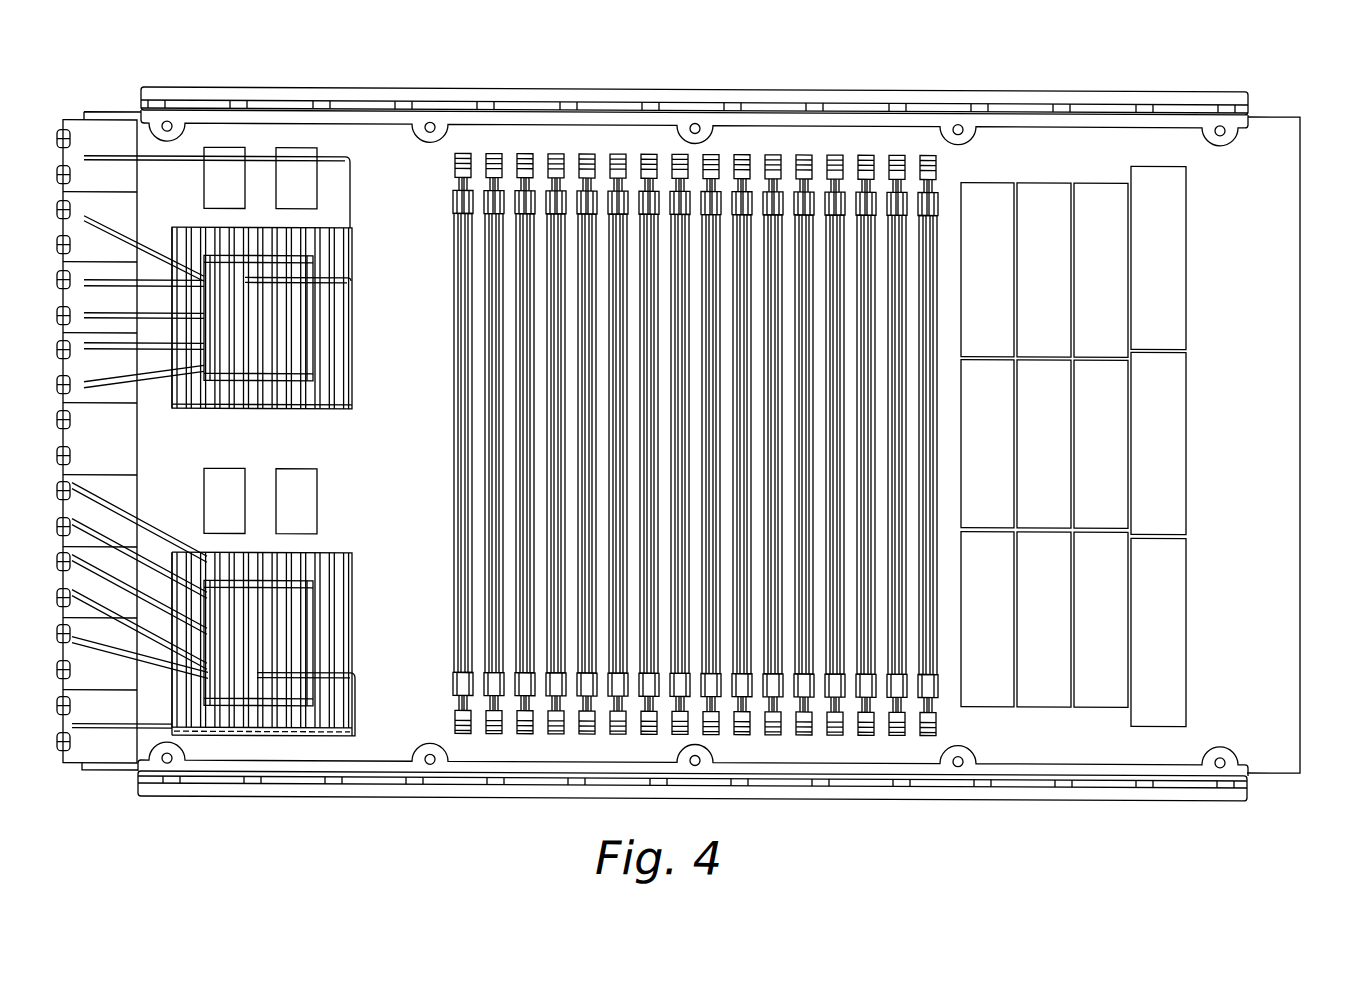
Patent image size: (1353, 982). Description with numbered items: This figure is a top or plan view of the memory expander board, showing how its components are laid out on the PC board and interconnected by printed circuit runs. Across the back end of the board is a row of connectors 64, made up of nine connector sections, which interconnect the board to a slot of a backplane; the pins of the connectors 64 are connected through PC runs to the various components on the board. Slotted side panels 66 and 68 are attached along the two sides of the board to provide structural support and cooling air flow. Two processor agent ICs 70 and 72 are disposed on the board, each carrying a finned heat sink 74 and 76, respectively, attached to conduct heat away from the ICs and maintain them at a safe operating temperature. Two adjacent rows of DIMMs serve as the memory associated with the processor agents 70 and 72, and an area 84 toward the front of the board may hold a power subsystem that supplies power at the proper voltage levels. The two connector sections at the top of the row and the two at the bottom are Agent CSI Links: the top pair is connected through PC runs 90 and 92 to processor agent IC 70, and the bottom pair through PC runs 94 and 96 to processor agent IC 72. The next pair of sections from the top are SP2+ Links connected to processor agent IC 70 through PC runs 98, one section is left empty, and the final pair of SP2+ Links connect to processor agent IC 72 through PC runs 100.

The row of connectors 64 is at (44, 92).
The slotted side panel 66 is at (352, 797).
The slotted side panel 68 is at (375, 87).
The processor agent IC 70 is at (287, 335).
The processor agent IC 72 is at (275, 655).
The finned heat sink 74 is at (342, 408).
The finned heat sink 76 is at (352, 588).
The area 84 is at (1224, 582).
The PC run 90 is at (350, 197).
The PC run 92 is at (153, 250).
The PC run 94 is at (118, 648).
The PC run 96 is at (357, 702).
The PC runs 98 is at (150, 395).
The PC runs 100 is at (165, 535).